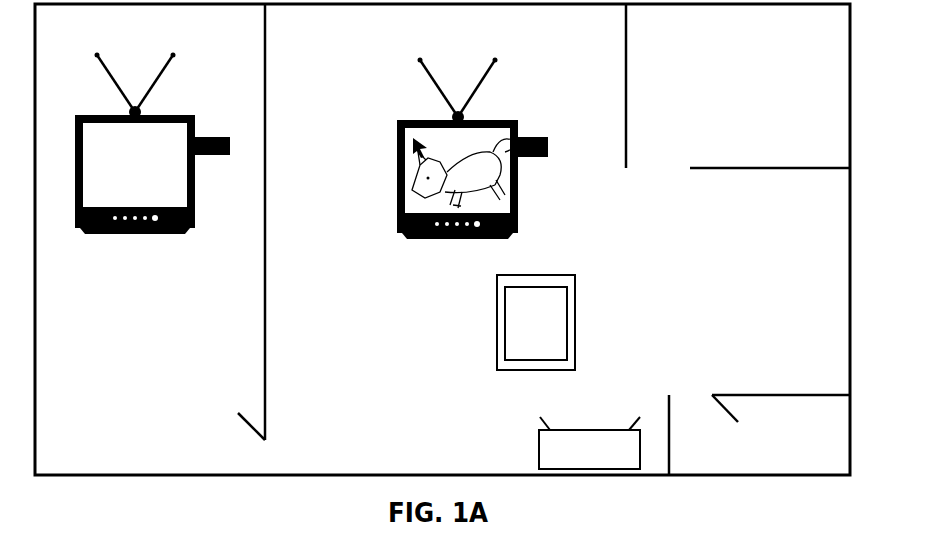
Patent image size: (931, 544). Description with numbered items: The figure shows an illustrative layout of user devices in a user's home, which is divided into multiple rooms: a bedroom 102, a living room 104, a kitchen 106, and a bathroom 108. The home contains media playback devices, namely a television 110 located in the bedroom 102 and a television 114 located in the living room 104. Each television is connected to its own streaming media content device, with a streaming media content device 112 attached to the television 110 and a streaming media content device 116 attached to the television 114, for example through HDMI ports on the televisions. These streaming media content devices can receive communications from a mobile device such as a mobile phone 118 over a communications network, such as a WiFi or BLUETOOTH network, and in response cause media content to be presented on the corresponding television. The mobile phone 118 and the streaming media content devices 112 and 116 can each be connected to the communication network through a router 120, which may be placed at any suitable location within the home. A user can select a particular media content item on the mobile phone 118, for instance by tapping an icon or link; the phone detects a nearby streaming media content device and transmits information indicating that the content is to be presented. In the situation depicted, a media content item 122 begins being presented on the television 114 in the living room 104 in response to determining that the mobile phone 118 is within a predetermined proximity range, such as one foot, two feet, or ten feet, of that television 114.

The bedroom 102 is at (258, 30).
The living room 104 is at (620, 30).
The kitchen 106 is at (844, 30).
The bathroom 108 is at (833, 432).
The television 110 is at (103, 234).
The streaming media content device 112 is at (216, 156).
The television 114 is at (398, 228).
The streaming media content device 116 is at (530, 157).
The mobile phone 118 is at (570, 312).
The router 120 is at (543, 455).
The media content item 122 is at (418, 146).